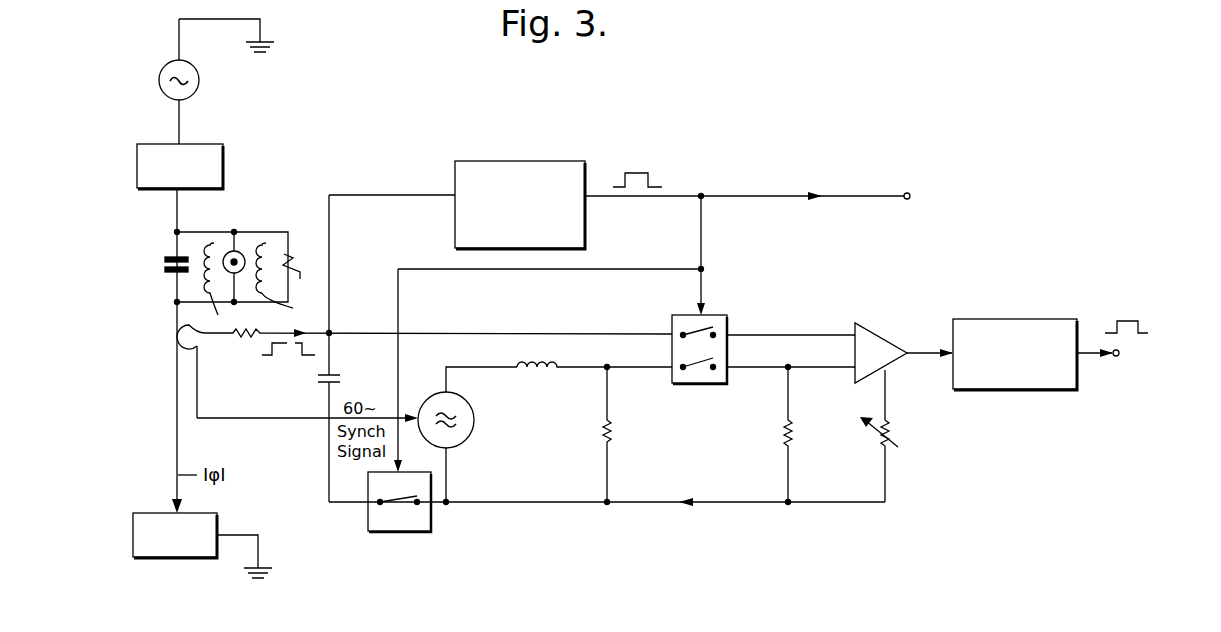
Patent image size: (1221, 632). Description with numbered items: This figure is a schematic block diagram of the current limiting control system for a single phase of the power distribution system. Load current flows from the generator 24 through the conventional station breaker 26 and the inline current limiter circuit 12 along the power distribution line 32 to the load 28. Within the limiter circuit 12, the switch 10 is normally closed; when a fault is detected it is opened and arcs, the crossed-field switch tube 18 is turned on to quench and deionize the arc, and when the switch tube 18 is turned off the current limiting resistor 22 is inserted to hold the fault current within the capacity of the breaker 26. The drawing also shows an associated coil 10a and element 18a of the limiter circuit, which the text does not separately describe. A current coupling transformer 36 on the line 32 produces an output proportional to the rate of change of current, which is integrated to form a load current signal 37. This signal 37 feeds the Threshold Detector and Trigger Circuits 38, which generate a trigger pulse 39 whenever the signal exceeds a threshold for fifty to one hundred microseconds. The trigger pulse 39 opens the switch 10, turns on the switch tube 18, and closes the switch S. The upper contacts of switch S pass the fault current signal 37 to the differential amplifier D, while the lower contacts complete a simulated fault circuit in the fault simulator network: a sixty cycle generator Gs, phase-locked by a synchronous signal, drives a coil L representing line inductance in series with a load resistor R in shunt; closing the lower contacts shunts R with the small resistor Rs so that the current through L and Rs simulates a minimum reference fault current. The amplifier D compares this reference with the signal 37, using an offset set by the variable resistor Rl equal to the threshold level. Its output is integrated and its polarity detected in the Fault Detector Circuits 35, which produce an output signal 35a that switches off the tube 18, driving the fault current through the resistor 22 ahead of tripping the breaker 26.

The inline switch 10 is at (166, 258).
The pickup coil 10a is at (230, 285).
The current limiter circuit 12 is at (287, 191).
The crossed-field switch tube 18 is at (238, 250).
The lamp winding 18a is at (296, 307).
The current limiting resistor 22 is at (284, 254).
The generator 24 is at (159, 76).
The station breaker 26 is at (145, 181).
The load 28 is at (132, 559).
The power distribution line 32 is at (180, 215).
The fault detector circuits 35 is at (1068, 384).
The output signal 35a is at (1148, 331).
The current coupling transformer 36 is at (173, 339).
The load current signal 37 is at (265, 358).
The threshold detector and trigger circuits 38 is at (455, 163).
The trigger pulse 39 is at (650, 172).
The switch S is at (731, 316).
The differential amplifier D is at (904, 353).
The generator Gs is at (470, 424).
The coil L is at (594, 380).
The load resistor R is at (616, 434).
The resistor Rs is at (768, 434).
The variable resistor Rl is at (891, 436).